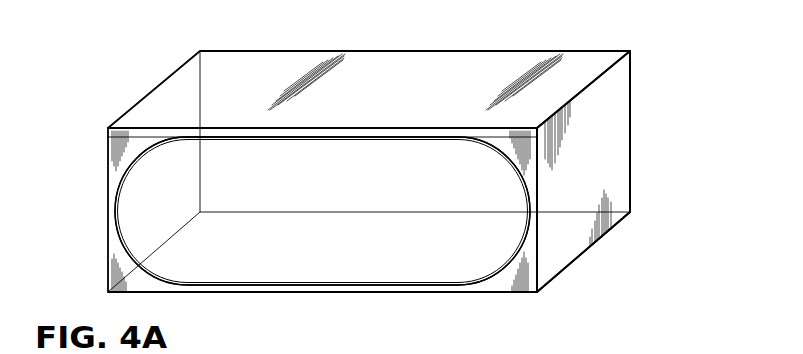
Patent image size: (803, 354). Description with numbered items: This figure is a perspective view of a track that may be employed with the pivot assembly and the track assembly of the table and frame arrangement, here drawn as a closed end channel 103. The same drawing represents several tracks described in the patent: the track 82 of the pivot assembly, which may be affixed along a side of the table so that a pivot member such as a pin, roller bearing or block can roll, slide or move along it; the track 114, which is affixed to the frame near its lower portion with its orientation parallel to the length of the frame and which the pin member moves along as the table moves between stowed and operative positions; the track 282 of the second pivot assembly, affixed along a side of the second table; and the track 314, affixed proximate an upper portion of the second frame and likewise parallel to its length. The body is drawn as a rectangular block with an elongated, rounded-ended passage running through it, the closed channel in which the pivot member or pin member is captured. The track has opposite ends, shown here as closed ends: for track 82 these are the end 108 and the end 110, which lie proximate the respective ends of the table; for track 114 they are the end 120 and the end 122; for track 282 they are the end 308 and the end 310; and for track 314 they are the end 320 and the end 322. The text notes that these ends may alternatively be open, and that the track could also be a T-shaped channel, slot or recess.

The track 82 is at (369, 148).
The track 114 is at (369, 148).
The track 282 is at (369, 148).
The track 314 is at (403, 41).
The end of track 108 is at (612, 92).
The closed end channel 103 is at (694, 131).
The end of track 120 is at (694, 131).
The end of track 308 is at (694, 131).
The end of track 320 is at (633, 137).
The end of track 110 is at (273, 211).
The end of track 122 is at (273, 211).
The end of track 310 is at (273, 211).
The end of track 322 is at (132, 208).